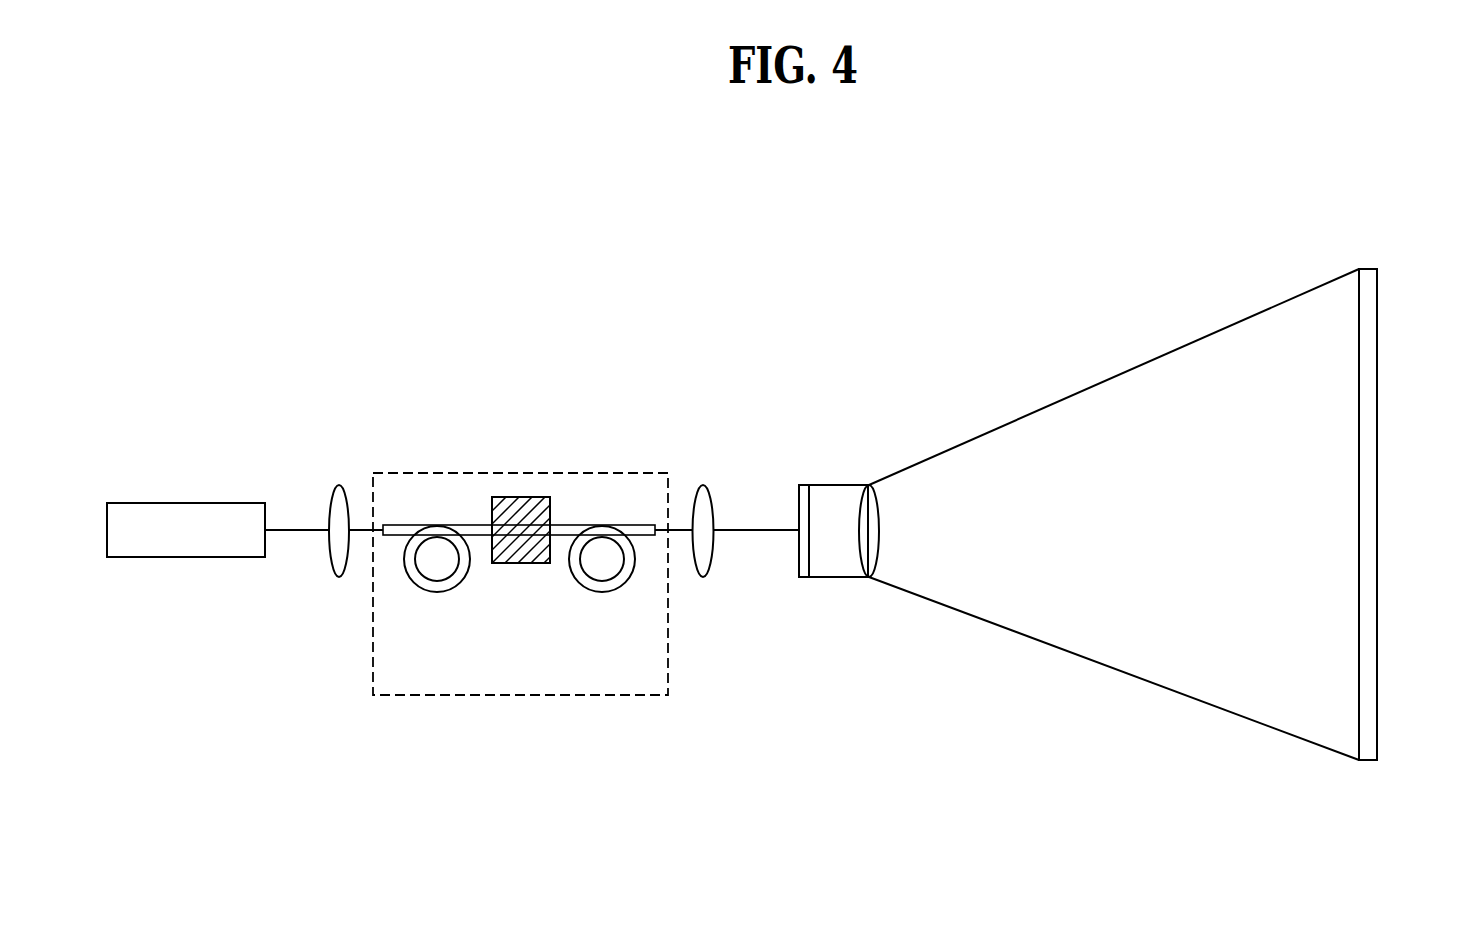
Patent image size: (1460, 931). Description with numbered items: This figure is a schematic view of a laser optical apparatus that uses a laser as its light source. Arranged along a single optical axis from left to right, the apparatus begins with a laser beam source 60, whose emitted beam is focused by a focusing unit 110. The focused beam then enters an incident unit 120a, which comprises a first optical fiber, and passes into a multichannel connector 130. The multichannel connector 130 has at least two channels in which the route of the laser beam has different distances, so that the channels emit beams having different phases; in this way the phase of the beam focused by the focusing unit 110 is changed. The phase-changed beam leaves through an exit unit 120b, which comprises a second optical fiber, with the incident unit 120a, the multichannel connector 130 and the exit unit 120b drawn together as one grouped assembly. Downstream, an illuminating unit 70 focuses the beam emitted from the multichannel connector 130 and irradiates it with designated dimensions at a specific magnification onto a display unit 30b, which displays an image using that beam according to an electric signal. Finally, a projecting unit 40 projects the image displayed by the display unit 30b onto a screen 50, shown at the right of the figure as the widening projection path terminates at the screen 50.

The laser beam source 60 is at (187, 557).
The focusing unit 110 is at (339, 577).
The incident unit 120a is at (436, 592).
The exit unit 120b is at (601, 592).
The multichannel connector 130 is at (520, 563).
The illuminating unit 70 is at (703, 577).
The display unit 30b is at (804, 570).
The projecting unit 40 is at (869, 577).
The screen 50 is at (1372, 557).